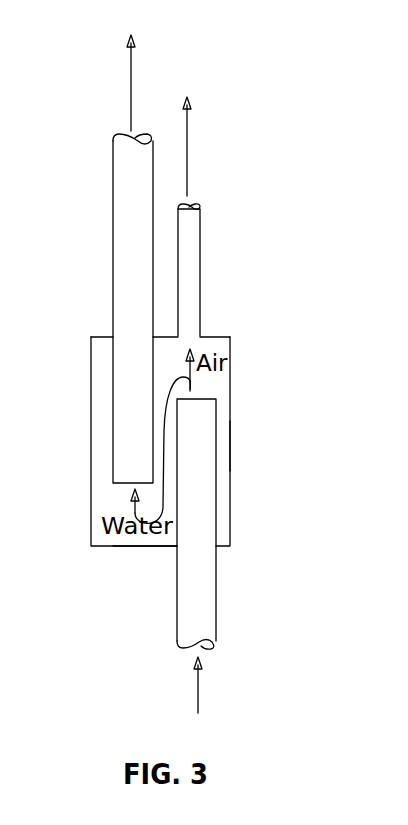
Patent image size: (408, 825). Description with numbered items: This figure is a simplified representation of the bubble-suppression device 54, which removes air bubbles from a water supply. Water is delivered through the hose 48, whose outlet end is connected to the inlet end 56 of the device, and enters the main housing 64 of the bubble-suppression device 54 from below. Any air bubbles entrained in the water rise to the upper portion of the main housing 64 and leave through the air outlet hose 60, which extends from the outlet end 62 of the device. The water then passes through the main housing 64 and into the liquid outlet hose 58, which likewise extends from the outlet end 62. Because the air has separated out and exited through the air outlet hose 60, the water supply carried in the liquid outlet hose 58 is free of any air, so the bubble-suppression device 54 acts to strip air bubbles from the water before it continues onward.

The hose 48 is at (214, 607).
The bubble-suppression device 54 is at (225, 300).
The inlet end 56 is at (143, 545).
The liquid outlet hose 58 is at (110, 202).
The air outlet hose 60 is at (197, 242).
The outlet end 62 is at (105, 336).
The main housing 64 is at (227, 448).